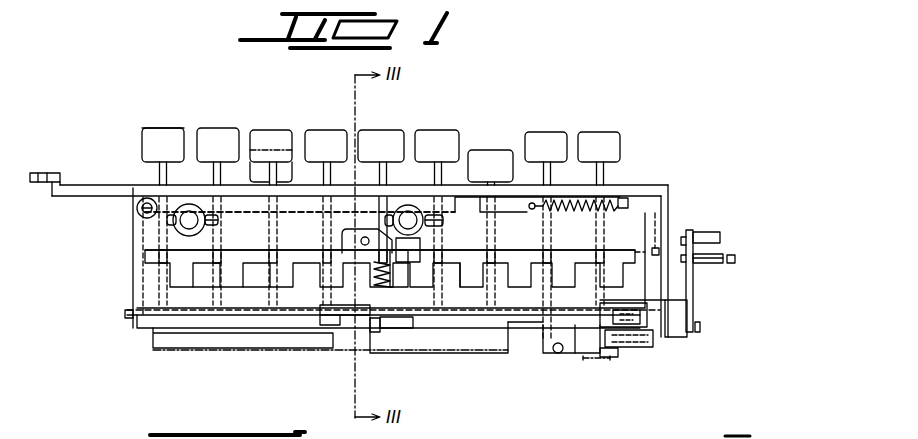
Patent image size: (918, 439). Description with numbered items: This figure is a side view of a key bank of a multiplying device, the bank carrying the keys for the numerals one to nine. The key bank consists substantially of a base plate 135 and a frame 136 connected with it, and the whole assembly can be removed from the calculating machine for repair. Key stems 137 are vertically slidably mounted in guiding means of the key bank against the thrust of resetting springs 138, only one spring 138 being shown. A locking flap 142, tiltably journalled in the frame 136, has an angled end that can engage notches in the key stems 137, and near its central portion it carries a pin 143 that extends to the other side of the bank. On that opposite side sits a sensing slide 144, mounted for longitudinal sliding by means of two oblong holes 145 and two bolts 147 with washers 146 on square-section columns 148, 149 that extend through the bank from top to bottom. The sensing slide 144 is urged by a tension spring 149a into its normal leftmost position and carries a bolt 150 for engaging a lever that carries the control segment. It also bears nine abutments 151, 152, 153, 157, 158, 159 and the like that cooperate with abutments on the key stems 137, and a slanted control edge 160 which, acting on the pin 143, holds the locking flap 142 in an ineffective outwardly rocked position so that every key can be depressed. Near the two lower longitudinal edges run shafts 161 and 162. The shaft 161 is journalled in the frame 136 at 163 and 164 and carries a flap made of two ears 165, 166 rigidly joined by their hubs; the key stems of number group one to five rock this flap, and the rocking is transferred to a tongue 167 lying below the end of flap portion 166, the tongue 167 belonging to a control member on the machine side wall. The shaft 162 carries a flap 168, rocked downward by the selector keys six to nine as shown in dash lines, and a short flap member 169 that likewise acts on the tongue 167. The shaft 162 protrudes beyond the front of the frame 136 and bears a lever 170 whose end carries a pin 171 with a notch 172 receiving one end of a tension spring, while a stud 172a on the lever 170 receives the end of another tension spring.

The base plate 135 is at (647, 200).
The frame 136 is at (133, 265).
The key stem 137 is at (158, 181).
The resetting spring 138 is at (375, 278).
The flap 142 is at (660, 235).
The pin 143 is at (362, 238).
The sensing slide 144 is at (172, 238).
The oblong hole 145 is at (210, 222).
The washer 146 is at (190, 204).
The bolt 147 is at (200, 214).
The column 148 is at (172, 260).
The column 149 is at (412, 258).
The tension spring 149a is at (604, 202).
The bolt 150 is at (138, 204).
The abutment 151 is at (610, 360).
The abutment 152 is at (548, 325).
The abutment 153 is at (481, 278).
The abutment 157 is at (263, 280).
The abutment 158 is at (222, 277).
The abutment 159 is at (190, 258).
The slanted control edge 160 is at (397, 217).
The shaft 161 is at (368, 310).
The shaft 162 is at (697, 320).
The journal 163 is at (366, 325).
The journal 164 is at (640, 310).
The flap part 165 is at (434, 337).
The flap part 166 is at (578, 340).
The tongue 167 is at (606, 362).
The flap 168 is at (233, 353).
The short flap member 169 is at (618, 338).
The lever 170 is at (690, 293).
The pin 171 is at (711, 264).
The notch 172 is at (727, 255).
The stud 172a is at (708, 233).